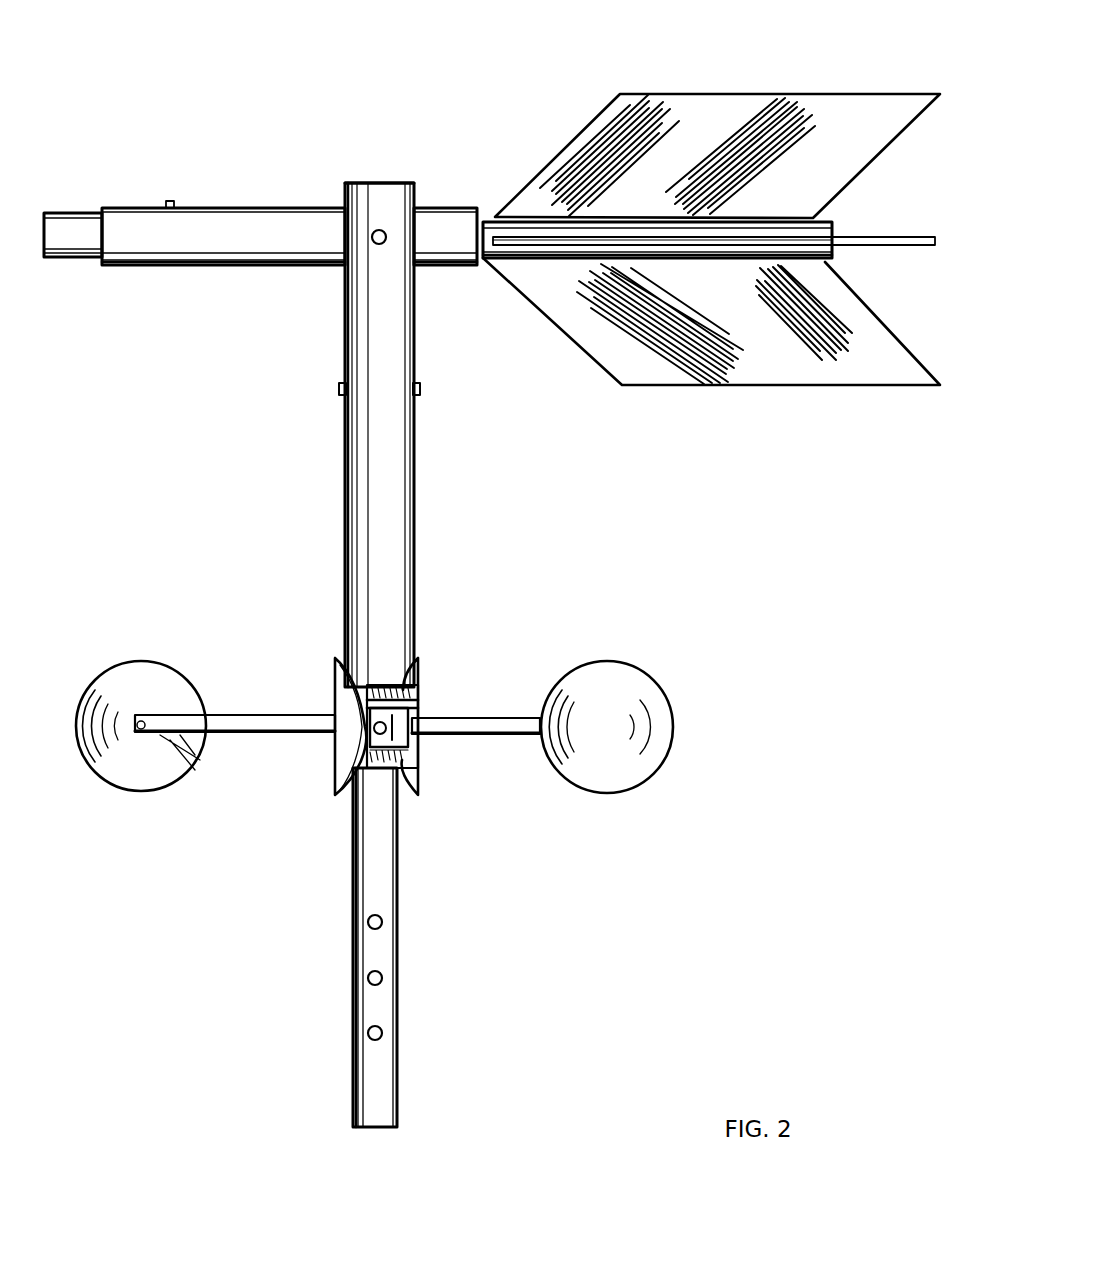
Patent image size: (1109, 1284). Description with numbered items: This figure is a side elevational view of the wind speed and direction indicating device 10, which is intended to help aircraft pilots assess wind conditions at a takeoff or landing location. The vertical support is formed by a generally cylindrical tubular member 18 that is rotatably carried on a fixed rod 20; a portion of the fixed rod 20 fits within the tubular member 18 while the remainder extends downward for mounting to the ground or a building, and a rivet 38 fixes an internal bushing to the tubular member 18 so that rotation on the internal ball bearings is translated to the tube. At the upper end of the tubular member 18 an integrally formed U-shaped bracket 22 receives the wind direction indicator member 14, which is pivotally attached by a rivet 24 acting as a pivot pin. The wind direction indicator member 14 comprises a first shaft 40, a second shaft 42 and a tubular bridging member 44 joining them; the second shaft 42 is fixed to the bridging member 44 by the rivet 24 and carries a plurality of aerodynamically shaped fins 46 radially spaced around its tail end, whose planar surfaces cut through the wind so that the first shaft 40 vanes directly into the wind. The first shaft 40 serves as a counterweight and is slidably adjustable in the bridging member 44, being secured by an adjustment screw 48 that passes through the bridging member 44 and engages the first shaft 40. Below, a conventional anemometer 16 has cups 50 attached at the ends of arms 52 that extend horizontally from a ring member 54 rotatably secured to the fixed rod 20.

The wind speed and direction indicating device 10 is at (483, 135).
The wind direction indicator member 14 is at (292, 188).
The anemometer 16 is at (316, 773).
The tubular member 18 is at (386, 570).
The fixed rod 20 is at (380, 1067).
The U-shaped bracket 22 is at (378, 182).
The rivet 24 is at (381, 233).
The rivet 38 is at (420, 390).
The first shaft 40 is at (68, 258).
The second shaft 42 is at (488, 260).
The bridging member 44 is at (212, 248).
The fins 46 is at (820, 105).
The adjustment screw 48 is at (170, 201).
The cups 50 is at (337, 680).
The arms 52 is at (275, 715).
The ring member 54 is at (402, 735).